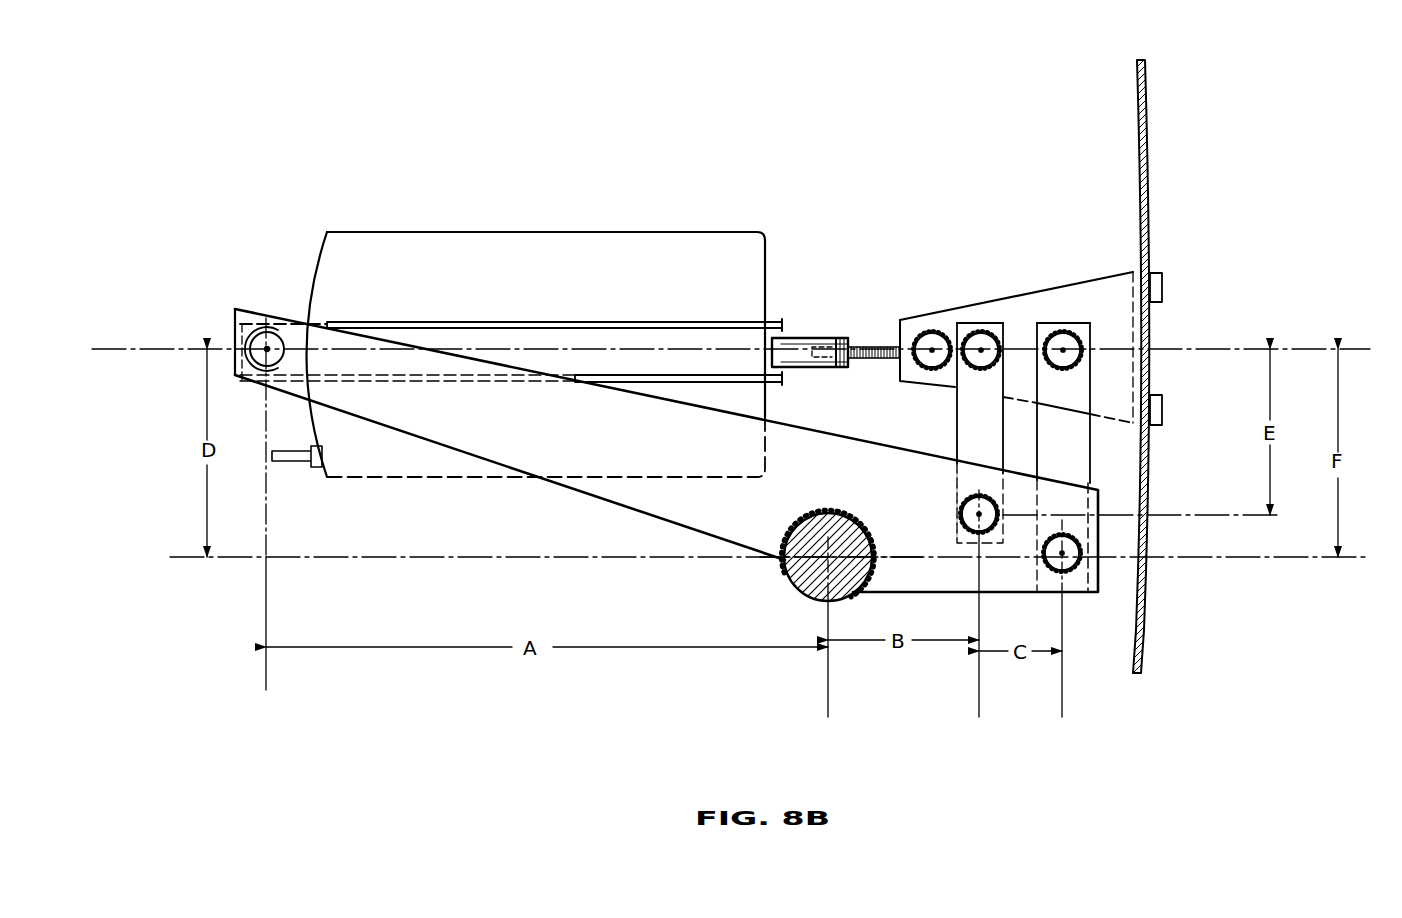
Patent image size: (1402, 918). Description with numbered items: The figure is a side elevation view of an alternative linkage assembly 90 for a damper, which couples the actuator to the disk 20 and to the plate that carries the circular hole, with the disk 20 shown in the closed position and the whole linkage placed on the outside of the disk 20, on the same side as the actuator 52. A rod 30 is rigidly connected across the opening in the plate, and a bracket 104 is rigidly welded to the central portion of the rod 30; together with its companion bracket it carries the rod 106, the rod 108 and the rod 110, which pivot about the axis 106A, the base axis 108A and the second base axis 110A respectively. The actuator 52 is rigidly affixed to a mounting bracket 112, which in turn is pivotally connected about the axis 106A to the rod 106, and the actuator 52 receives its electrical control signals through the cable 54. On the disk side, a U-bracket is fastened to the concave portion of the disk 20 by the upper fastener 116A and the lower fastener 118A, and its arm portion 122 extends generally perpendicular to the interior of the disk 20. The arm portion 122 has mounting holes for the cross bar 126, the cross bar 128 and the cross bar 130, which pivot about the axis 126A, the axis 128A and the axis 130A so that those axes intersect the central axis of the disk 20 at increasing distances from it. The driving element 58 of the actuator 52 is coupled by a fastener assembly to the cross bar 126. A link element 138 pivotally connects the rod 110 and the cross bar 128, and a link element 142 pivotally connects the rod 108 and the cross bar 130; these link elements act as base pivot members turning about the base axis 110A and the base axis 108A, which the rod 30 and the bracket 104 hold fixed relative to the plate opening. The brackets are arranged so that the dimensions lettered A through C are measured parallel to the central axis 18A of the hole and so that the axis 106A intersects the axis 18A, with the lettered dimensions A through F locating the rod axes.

The central axis of hole 18A is at (130, 349).
The disk 20 is at (1151, 184).
The rod 30 is at (818, 527).
The actuator 52 is at (550, 252).
The cable 54 is at (298, 456).
The driving element 58 is at (840, 337).
The linkage assembly 90 is at (836, 190).
The bracket 104 is at (610, 499).
The rod 106 is at (275, 327).
The axis 106A is at (247, 330).
The rod 108 is at (1067, 560).
The base axis 108A is at (1062, 553).
The rod 110 is at (977, 514).
The second base axis 110A is at (979, 514).
The mounting bracket 112 is at (695, 323).
The upper fastener 116A is at (1163, 287).
The lower fastener 118A is at (1163, 410).
The arm portion of U-bracket 122 is at (1010, 307).
The cross bar 126 is at (922, 335).
The axis 126A is at (932, 351).
The cross bar 128 is at (978, 333).
The axis 128A is at (981, 351).
The cross bar 130 is at (1058, 333).
The axis 130A is at (1064, 350).
The link element 138 is at (963, 442).
The link element 142 is at (1087, 457).